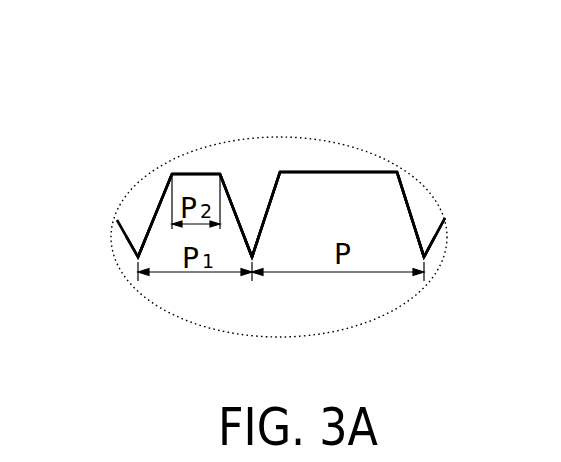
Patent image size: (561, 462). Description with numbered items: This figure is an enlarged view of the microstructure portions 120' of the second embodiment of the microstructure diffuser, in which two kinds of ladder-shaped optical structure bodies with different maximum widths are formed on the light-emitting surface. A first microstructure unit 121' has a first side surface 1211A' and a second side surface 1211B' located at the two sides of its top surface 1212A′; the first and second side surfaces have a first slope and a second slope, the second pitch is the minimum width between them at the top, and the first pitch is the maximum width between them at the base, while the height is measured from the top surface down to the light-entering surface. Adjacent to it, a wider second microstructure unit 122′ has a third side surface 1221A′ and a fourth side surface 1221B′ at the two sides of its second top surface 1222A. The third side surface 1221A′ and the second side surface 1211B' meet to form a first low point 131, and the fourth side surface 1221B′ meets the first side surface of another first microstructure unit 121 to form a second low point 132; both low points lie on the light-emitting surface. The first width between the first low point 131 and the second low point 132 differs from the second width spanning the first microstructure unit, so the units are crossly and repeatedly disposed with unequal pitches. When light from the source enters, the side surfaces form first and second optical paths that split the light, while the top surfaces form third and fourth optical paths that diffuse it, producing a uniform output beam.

The microstructure portions 120' is at (277, 145).
The first microstructure unit 121' is at (190, 187).
The first side surface 1211A' is at (292, 194).
The second side surface 1211B' is at (248, 180).
The top surface 1212A′ is at (198, 174).
The second microstructure unit 122′ is at (347, 207).
The third side surface 1221A′ is at (266, 210).
The fourth side surface 1221B′ is at (411, 208).
The second top surface 1222A is at (322, 172).
The first low point 131 is at (250, 260).
The second low point 132 is at (136, 258).
The first microstructure unit 121 is at (540, 184).